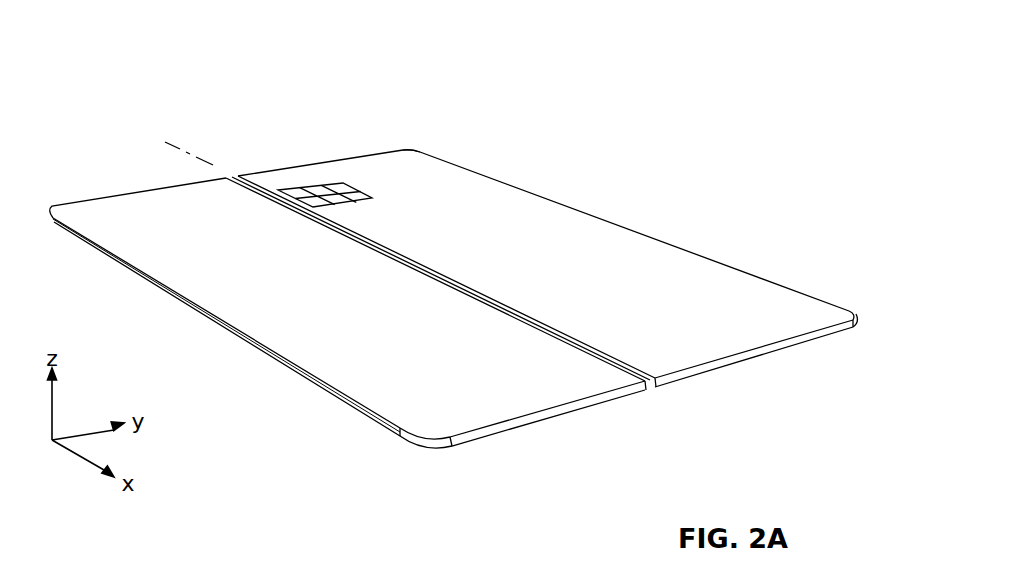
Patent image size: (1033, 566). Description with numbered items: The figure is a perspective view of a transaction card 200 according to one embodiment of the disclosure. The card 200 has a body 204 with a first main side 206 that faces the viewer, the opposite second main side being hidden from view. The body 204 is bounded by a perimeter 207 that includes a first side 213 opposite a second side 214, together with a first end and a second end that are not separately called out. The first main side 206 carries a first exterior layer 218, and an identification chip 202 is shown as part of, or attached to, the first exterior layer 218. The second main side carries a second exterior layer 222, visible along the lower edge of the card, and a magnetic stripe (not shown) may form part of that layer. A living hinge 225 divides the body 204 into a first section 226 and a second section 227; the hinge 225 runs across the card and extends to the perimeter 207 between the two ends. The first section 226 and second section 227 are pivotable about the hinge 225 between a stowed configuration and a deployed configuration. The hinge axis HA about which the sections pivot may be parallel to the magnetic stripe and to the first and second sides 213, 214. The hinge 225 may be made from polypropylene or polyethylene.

The card 200 is at (133, 38).
The identification chip 202 is at (333, 188).
The body 204 is at (758, 283).
The first main side 206 is at (104, 210).
The perimeter 207 is at (567, 400).
The first side 213 is at (294, 158).
The second side 214 is at (548, 186).
The first exterior layer 218 is at (562, 274).
The second exterior layer 222 is at (828, 338).
The living hinge 225 is at (624, 351).
The first section 226 is at (453, 180).
The second section 227 is at (398, 393).
The hinge axis HA is at (167, 142).